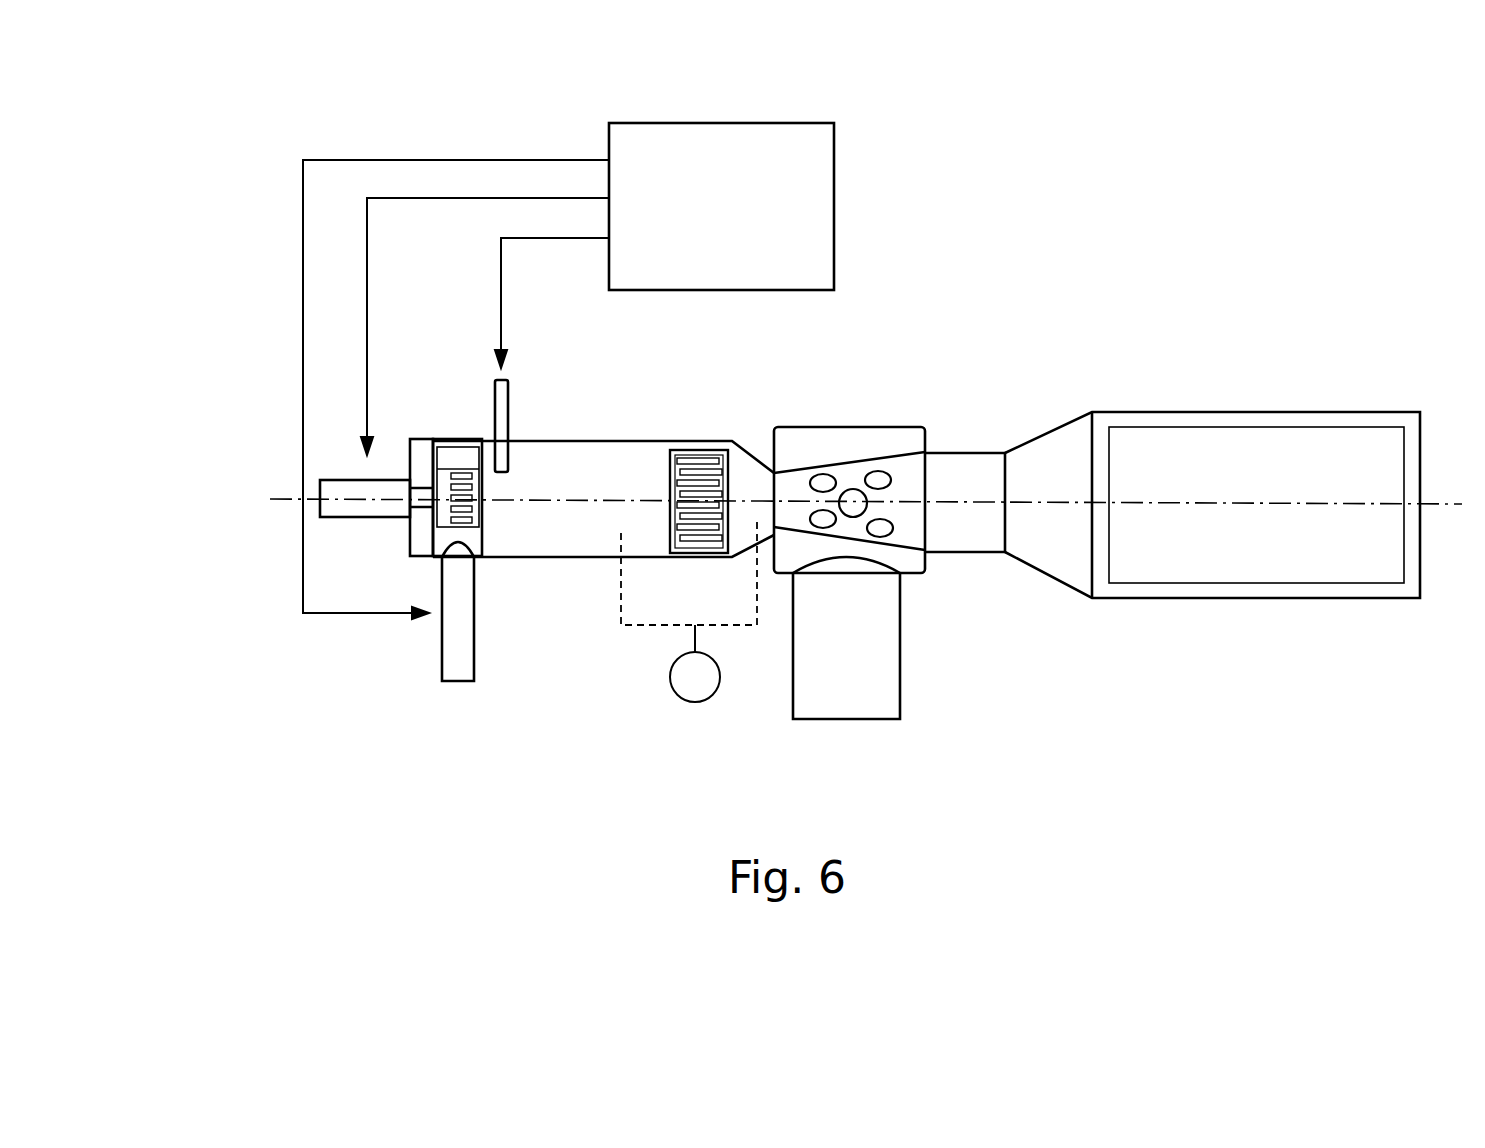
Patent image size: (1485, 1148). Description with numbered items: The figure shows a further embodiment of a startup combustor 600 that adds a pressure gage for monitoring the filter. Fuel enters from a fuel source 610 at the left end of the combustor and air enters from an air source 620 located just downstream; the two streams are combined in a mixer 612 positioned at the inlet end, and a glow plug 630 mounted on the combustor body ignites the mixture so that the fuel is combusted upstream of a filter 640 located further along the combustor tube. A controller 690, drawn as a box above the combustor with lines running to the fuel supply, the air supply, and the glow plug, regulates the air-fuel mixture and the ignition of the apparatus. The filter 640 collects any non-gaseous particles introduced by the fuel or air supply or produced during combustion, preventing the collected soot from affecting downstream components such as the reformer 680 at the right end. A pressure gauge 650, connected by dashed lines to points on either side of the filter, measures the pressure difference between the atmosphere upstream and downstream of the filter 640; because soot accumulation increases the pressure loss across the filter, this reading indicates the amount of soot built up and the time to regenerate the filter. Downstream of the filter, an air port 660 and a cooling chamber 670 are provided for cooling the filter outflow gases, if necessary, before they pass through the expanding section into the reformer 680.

The startup combustor 600 is at (962, 222).
The fuel source 610 is at (290, 478).
The mixer 612 is at (453, 432).
The air source 620 is at (458, 688).
The glow plug 630 is at (515, 393).
The filter 640 is at (688, 433).
The pressure gauge 650 is at (702, 702).
The air port 660 is at (882, 723).
The cooling chamber 670 is at (875, 417).
The reformer 680 is at (1227, 402).
The controller 690 is at (755, 122).